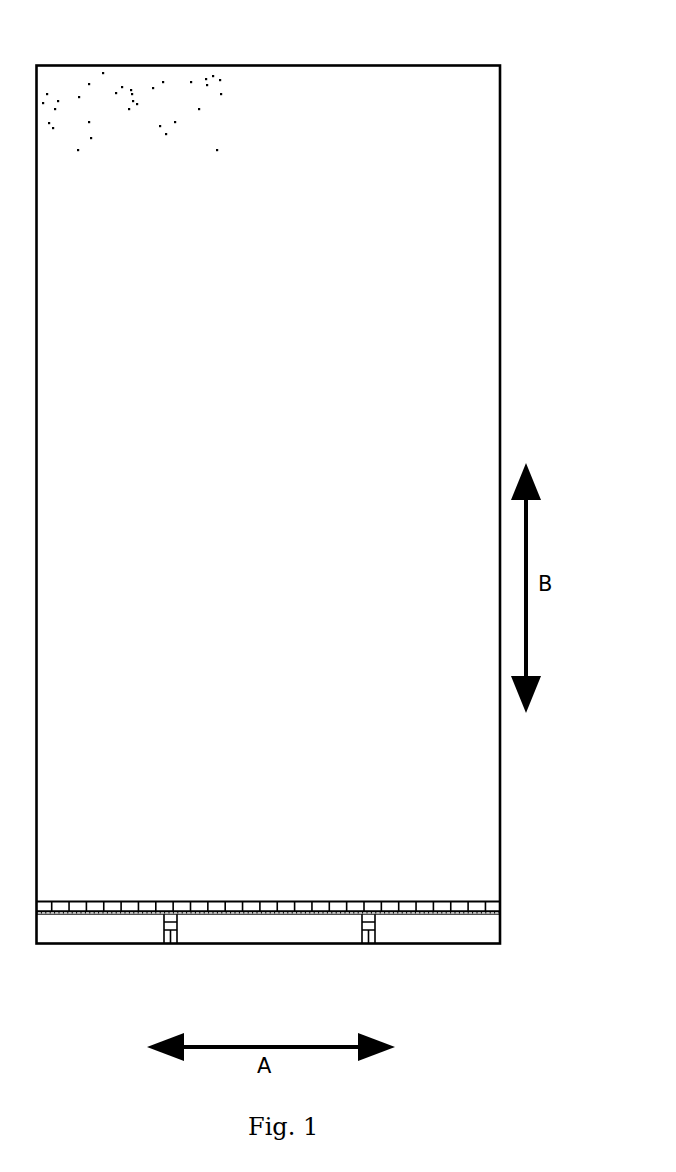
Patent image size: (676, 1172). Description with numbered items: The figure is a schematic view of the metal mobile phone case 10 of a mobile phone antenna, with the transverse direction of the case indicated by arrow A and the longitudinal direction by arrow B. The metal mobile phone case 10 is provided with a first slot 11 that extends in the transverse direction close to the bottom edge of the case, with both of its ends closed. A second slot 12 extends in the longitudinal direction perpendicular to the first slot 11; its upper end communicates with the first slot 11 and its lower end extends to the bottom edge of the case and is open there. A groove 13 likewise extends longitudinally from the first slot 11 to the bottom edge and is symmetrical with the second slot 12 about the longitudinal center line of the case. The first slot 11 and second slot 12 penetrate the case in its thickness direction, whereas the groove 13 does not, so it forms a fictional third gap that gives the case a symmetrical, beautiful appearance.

The metal mobile phone case 10 is at (257, 120).
The first slot 11 is at (477, 907).
The second slot 12 is at (165, 945).
The groove 13 is at (370, 945).